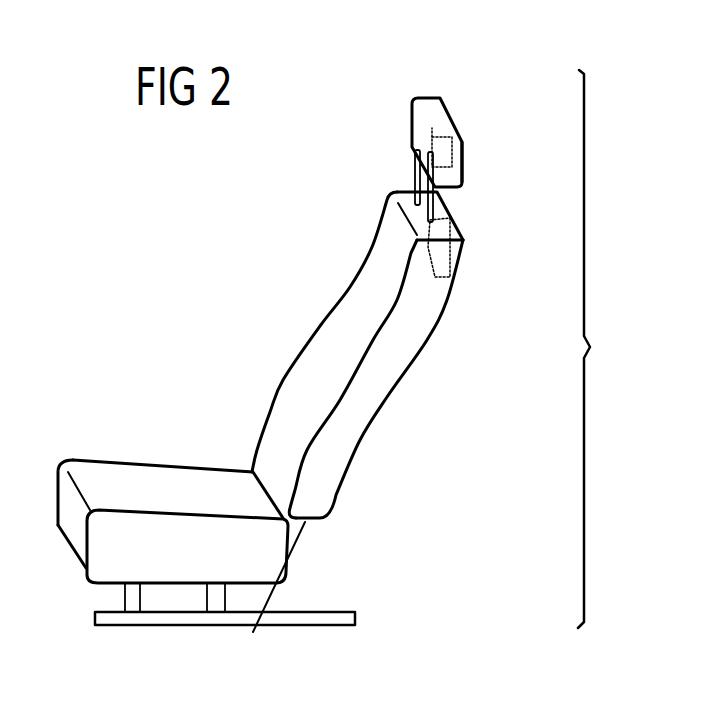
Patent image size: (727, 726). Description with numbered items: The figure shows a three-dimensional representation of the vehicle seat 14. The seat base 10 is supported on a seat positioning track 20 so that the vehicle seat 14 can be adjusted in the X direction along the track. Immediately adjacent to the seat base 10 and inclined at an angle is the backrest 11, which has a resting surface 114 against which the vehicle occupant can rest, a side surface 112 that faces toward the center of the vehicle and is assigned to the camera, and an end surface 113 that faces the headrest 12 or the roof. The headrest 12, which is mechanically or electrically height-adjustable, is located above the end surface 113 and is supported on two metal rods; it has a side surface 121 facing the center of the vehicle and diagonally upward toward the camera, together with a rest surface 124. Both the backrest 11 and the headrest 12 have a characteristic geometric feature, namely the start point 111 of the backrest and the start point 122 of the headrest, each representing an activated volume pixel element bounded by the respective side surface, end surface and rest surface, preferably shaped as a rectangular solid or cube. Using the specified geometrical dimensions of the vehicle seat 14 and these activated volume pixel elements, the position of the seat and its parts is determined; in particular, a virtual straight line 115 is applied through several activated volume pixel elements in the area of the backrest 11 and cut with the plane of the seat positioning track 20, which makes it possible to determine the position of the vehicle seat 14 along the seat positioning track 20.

The seat base 10 is at (143, 475).
The backrest 11 is at (390, 382).
The headrest 12 is at (454, 133).
The vehicle seat 14 is at (601, 349).
The seat positioning track 20 is at (342, 608).
The start point 111 is at (447, 261).
The side surface 112 is at (405, 350).
The end surface 113 is at (400, 192).
The resting surface 114 is at (368, 298).
The virtual straight line 115 is at (296, 547).
The side surface 121 is at (458, 158).
The start point 122 is at (435, 128).
The rest surface 124 is at (412, 120).